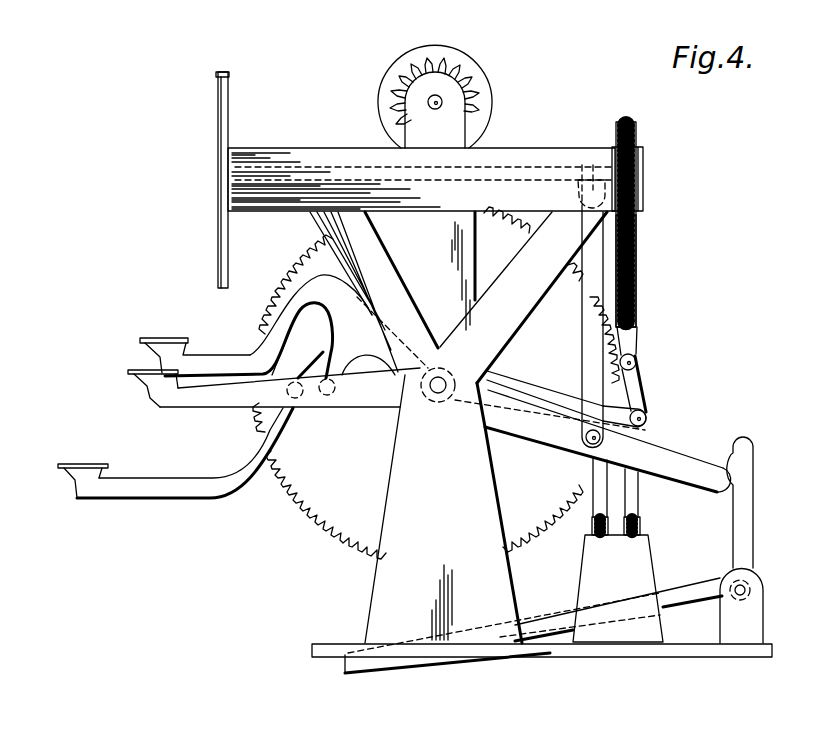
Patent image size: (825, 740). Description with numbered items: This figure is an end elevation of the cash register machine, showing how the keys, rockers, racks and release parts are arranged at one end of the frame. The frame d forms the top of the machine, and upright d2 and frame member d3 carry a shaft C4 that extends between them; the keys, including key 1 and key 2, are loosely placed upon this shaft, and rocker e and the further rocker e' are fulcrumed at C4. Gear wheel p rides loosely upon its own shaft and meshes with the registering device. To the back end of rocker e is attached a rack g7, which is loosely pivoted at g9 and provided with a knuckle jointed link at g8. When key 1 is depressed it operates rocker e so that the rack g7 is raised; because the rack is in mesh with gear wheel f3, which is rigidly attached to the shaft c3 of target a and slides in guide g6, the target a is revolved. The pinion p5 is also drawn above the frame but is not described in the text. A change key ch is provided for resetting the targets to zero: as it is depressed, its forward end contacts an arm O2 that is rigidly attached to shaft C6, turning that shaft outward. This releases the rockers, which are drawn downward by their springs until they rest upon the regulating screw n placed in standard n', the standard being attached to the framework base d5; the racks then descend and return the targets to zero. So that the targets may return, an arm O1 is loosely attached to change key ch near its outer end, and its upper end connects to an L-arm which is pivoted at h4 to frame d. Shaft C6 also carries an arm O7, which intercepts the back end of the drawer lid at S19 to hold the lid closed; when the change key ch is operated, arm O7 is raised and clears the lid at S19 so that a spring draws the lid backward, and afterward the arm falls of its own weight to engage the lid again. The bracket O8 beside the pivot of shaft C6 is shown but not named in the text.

The target a is at (217, 129).
The frame d is at (421, 179).
The shaft of target a c3 is at (296, 160).
The gear wheel p5 is at (449, 91).
The gear wheel f3 is at (637, 140).
The rack g7 is at (637, 259).
The guide g6 is at (644, 173).
The pivot of L-arm h4 is at (591, 164).
The upright d2 is at (486, 297).
The frame member d3 is at (443, 509).
The shaft C4 is at (437, 394).
The gear wheel p is at (436, 383).
The key 1 is at (236, 340).
The change key ch is at (267, 376).
The rocker e is at (297, 409).
The rocker e' is at (330, 407).
The key 2 is at (175, 453).
The arm O1 is at (582, 338).
The knuckle jointed link g8 is at (637, 362).
The pivot of rack g9 is at (647, 419).
The regulating screw n is at (605, 496).
The standard n' is at (618, 588).
The arm O2 is at (755, 492).
The bracket O8 is at (741, 606).
The shaft C6 is at (751, 590).
The arm O7 is at (548, 624).
The framework base d5 is at (773, 650).
The back end of lid S19 is at (344, 664).